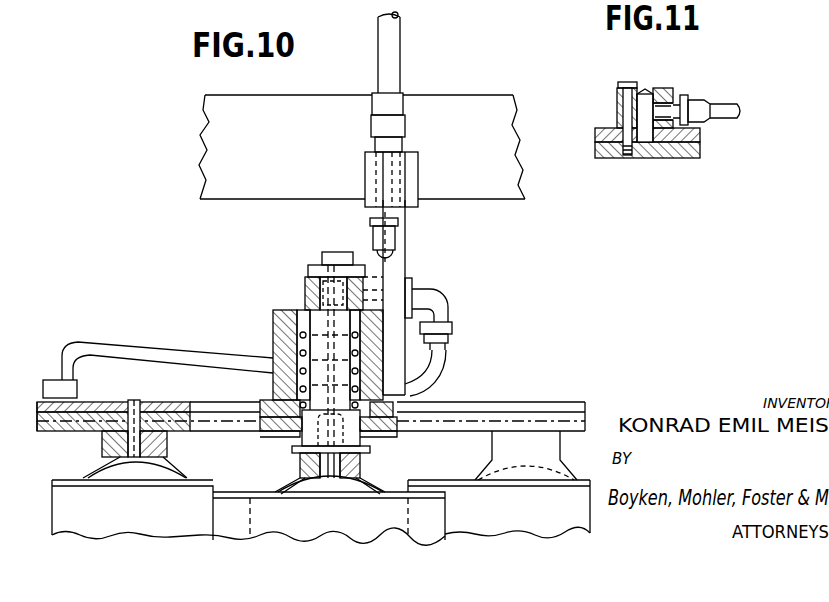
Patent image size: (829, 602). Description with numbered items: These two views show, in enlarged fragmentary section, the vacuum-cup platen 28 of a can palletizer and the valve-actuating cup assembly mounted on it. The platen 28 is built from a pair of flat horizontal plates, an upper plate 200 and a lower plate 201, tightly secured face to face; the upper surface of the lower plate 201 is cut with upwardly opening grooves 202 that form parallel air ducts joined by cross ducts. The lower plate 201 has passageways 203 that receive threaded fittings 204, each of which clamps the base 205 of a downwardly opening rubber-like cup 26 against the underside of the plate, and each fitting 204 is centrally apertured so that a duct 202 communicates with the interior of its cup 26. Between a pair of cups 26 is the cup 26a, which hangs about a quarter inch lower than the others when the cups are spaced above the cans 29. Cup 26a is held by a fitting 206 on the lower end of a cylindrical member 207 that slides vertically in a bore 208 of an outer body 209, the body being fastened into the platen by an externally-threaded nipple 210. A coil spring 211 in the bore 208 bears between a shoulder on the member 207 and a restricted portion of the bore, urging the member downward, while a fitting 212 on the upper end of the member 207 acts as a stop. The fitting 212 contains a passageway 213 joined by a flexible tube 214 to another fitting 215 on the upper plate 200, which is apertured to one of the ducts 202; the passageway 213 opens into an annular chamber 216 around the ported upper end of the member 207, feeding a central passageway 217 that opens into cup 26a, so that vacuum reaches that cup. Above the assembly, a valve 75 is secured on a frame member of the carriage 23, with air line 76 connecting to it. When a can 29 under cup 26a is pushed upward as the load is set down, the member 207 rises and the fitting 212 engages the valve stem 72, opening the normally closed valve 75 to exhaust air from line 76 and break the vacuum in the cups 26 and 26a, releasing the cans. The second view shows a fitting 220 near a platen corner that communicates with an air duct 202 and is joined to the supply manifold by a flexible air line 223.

In FIG. 10, the carriage 23 is at (458, 96).
In FIG. 10, the air line 76 is at (400, 50).
In FIG. 10, the valve 75 is at (366, 179).
In FIG. 10, the valve stem 72 is at (372, 256).
In FIG. 10, the passageway 213 is at (398, 290).
In FIG. 10, the central passageway 217 is at (442, 307).
In FIG. 10, the fitting 212 is at (306, 283).
In FIG. 10, the annular chamber 216 is at (307, 303).
In FIG. 10, the outer body 209 is at (280, 333).
In FIG. 10, the coil spring 211 is at (302, 353).
In FIG. 10, the vertical bore 208 is at (300, 393).
In FIG. 10, the fitting 215 is at (52, 380).
In FIG. 10, the flexible tube 214 is at (122, 349).
In FIG. 10, the upper plate 200 is at (558, 390).
In FIG. 11, the upper plate 200 is at (700, 134).
In FIG. 10, the lower plate 201 is at (486, 431).
In FIG. 11, the lower plate 201 is at (698, 154).
In FIG. 10, the platen 28 is at (578, 402).
In FIG. 10, the grooves 202 is at (133, 398).
In FIG. 10, the passageways 203 is at (170, 428).
In FIG. 10, the bases 205 is at (118, 441).
In FIG. 10, the threaded fittings 204 is at (122, 465).
In FIG. 10, the vacuum cups 26 is at (168, 470).
In FIG. 10, the fitting 206 is at (300, 457).
In FIG. 10, the vacuum cup 26a is at (305, 462).
In FIG. 10, the cans 29 is at (377, 529).
In FIG. 10, the externally-threaded nipple 210 is at (380, 432).
In FIG. 10, the cylindrical member 207 is at (383, 393).
In FIG. 11, the fitting 220 is at (662, 90).
In FIG. 11, the flexible air line 223 is at (732, 105).